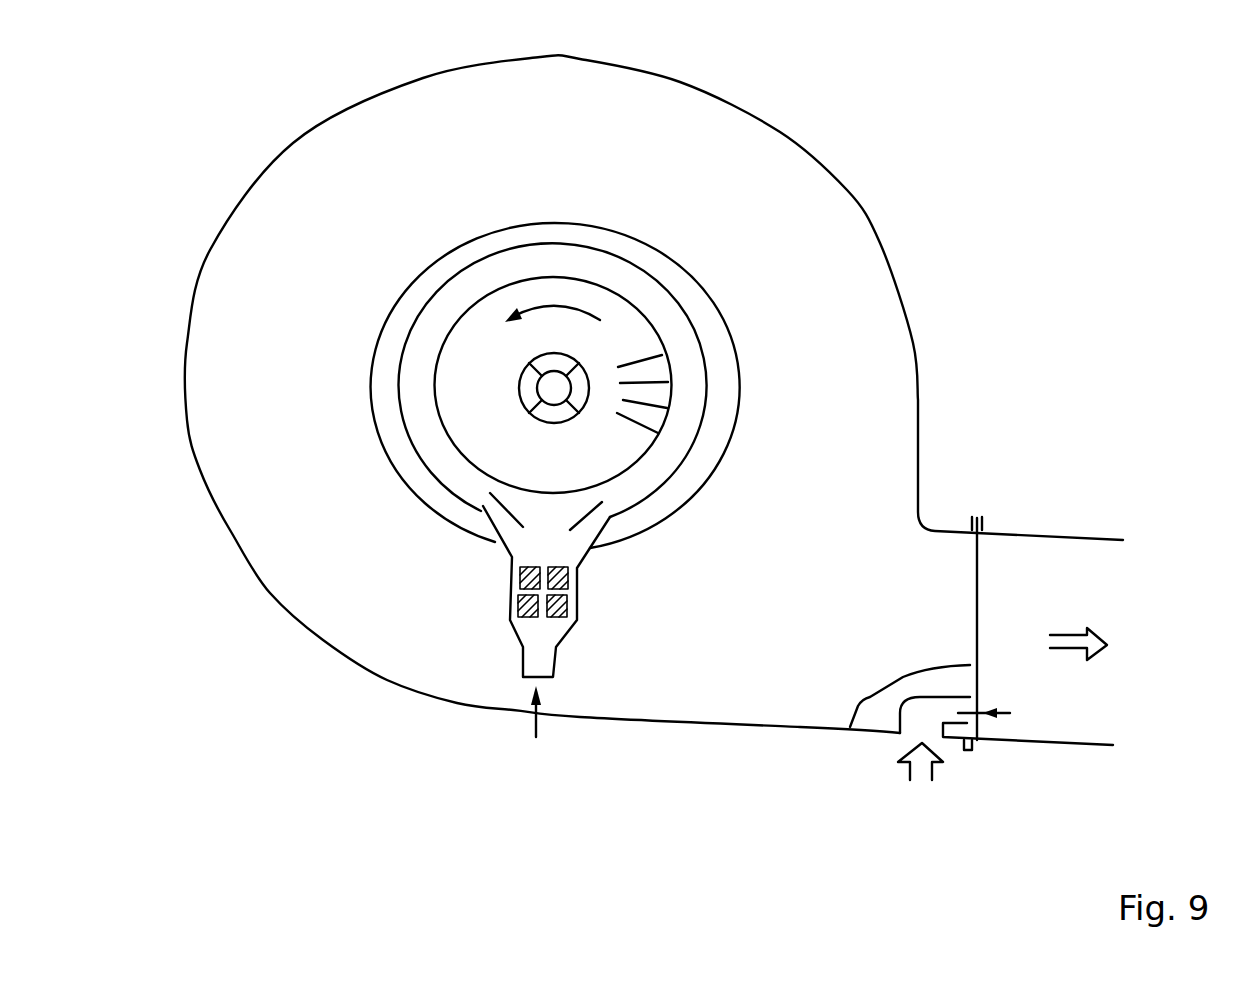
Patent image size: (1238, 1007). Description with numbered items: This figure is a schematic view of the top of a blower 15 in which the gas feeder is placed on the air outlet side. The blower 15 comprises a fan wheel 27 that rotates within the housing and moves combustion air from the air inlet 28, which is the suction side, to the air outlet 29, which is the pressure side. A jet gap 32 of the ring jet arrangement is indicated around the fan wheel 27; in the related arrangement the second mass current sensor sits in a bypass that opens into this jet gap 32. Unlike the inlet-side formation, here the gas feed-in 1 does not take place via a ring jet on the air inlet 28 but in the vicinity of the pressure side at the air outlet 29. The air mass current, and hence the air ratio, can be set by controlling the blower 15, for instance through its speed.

The gas feed-in 1 is at (890, 747).
The blower 15 is at (654, 394).
The fan wheel 27 is at (638, 425).
The air inlet 28 is at (526, 388).
The air outlet 29 is at (1032, 676).
The jet gap 32 is at (707, 352).